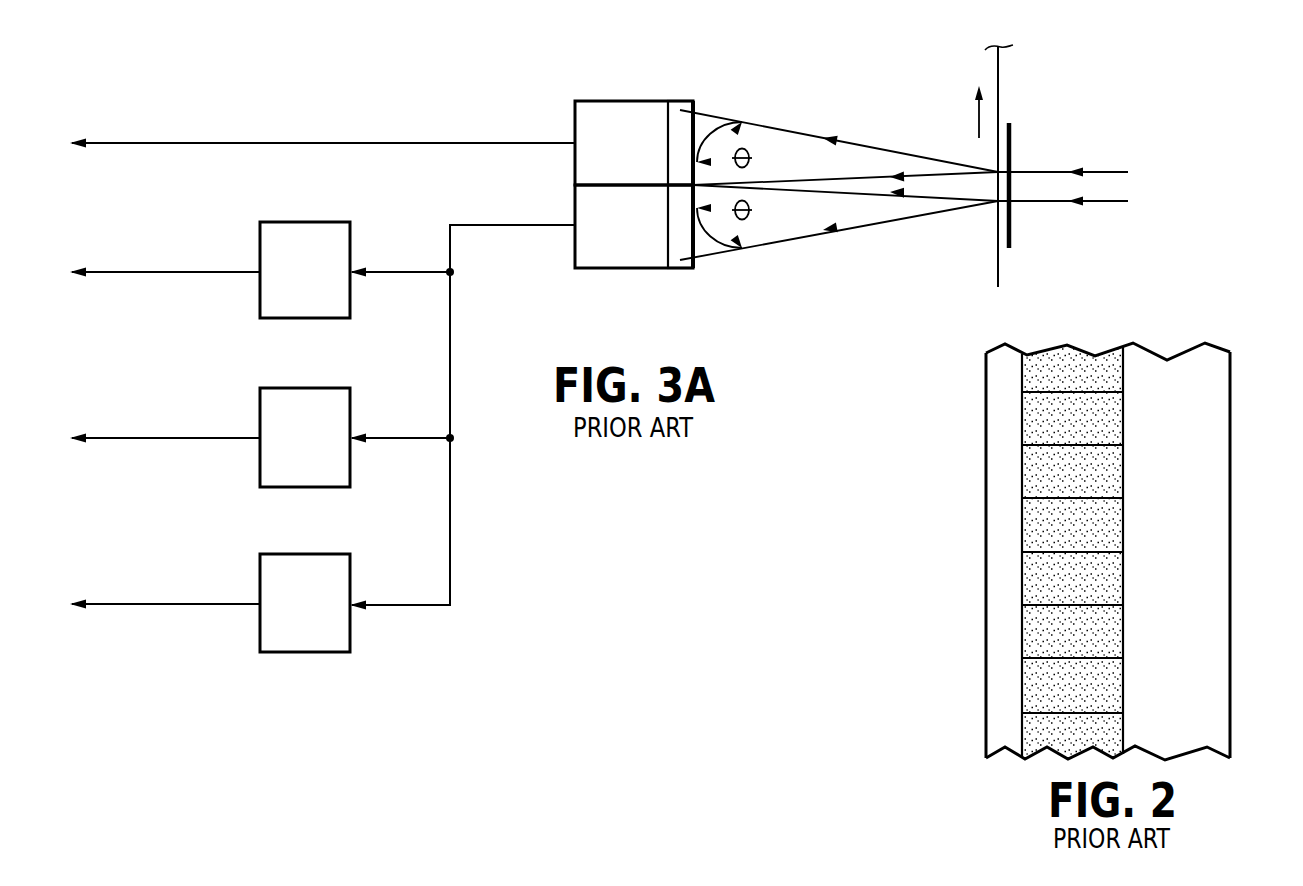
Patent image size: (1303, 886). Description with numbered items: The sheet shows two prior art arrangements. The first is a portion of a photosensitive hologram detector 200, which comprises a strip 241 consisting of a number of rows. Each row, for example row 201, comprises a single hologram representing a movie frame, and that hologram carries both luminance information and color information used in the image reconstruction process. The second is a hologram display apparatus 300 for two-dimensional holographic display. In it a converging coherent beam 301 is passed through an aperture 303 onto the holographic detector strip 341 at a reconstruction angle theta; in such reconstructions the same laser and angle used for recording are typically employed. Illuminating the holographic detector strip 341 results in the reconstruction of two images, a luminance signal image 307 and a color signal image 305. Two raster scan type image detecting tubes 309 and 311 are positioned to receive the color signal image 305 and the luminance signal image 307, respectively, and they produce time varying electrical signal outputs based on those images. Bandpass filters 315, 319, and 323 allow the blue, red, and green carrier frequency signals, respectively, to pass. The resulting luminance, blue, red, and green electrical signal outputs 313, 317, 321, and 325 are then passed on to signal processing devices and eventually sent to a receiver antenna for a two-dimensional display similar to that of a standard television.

In FIG. 3A, the hologram display apparatus 300 is at (404, 81).
In FIG. 3A, the converging coherent beam 301 is at (1105, 188).
In FIG. 3A, the aperture 303 is at (1012, 148).
In FIG. 3A, the color signal image 305 is at (677, 224).
In FIG. 3A, the luminance signal image 307 is at (677, 147).
In FIG. 3A, the raster scan type image detecting tube 309 is at (626, 270).
In FIG. 3A, the raster scan type image detecting tube 311 is at (628, 100).
In FIG. 3A, the luminance electrical signal output 313 is at (205, 142).
In FIG. 3A, the bandpass filter 315 is at (305, 222).
In FIG. 3A, the blue electrical signal output 317 is at (205, 271).
In FIG. 3A, the bandpass filter 319 is at (305, 387).
In FIG. 3A, the red electrical signal output 321 is at (205, 437).
In FIG. 3A, the bandpass filter 323 is at (305, 554).
In FIG. 3A, the green electrical signal output 325 is at (205, 603).
In FIG. 3A, the holographic detector strip 341 is at (1000, 73).
In FIG. 2, the photosensitive hologram detector 200 is at (958, 385).
In FIG. 2, the row 201 is at (1125, 418).
In FIG. 2, the strip 241 is at (1215, 533).